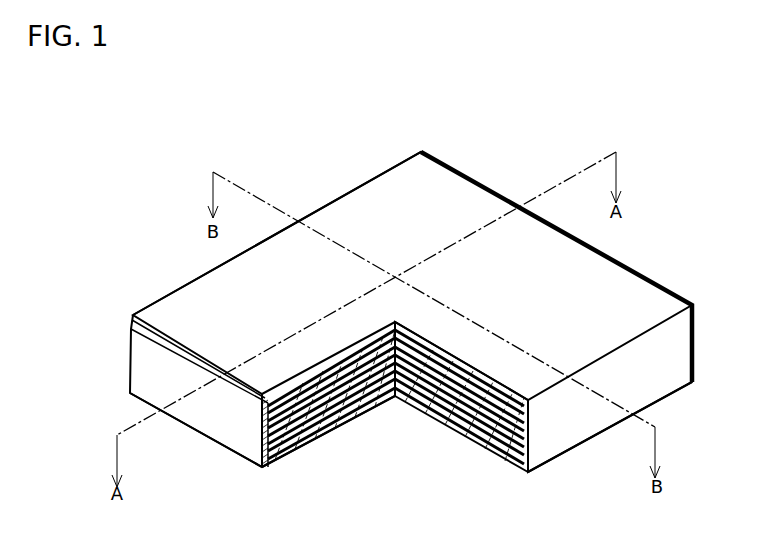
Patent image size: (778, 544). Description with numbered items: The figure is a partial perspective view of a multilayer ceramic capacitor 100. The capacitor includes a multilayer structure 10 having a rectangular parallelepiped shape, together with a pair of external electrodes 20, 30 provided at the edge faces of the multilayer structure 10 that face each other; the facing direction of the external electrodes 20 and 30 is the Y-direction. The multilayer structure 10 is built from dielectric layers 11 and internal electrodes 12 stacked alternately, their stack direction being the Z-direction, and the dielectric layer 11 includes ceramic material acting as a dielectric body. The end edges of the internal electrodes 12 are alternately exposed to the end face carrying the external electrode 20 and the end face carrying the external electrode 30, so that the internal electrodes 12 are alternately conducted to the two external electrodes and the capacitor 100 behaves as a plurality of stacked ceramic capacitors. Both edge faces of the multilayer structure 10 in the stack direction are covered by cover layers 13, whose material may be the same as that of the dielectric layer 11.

The multilayer ceramic capacitor 100 is at (672, 200).
The multilayer structure 10 is at (182, 287).
The external electrode 20 is at (131, 328).
The external electrode 30 is at (437, 161).
The dielectric layer 11 is at (333, 432).
The internal electrode 12 is at (297, 442).
The cover layer 13 is at (477, 442).